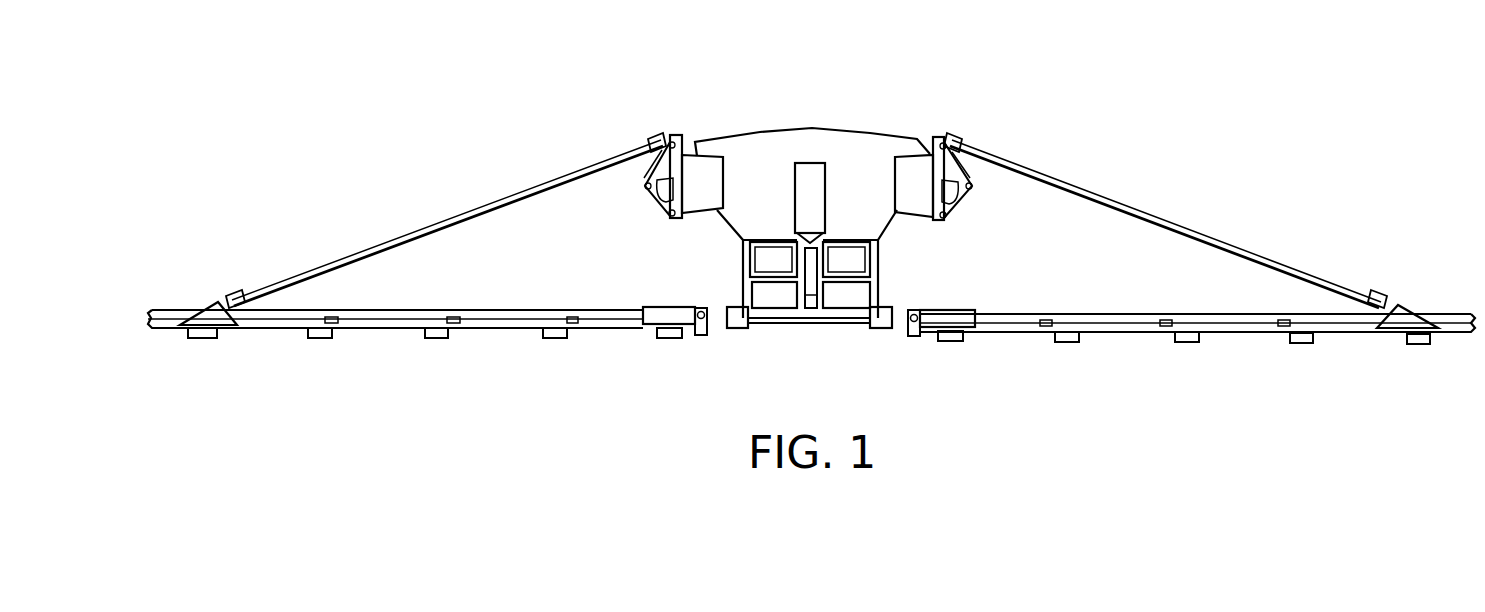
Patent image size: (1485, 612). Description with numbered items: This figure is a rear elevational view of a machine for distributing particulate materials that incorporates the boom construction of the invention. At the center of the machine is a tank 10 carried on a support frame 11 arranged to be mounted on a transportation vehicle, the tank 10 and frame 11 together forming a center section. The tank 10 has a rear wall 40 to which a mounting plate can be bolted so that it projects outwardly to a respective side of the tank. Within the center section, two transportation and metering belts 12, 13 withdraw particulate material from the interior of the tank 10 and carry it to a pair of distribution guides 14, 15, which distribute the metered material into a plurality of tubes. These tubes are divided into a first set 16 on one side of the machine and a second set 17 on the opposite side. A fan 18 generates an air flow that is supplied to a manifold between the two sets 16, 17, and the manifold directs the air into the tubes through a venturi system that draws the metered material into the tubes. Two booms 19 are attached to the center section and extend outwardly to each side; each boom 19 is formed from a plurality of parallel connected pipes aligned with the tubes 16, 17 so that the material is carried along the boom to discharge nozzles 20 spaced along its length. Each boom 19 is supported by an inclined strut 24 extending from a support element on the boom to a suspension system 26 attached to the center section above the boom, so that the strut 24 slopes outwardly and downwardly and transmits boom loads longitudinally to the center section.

The tank 10 is at (884, 122).
The support frame 11 is at (742, 258).
The transportation and metering belt 12 is at (775, 250).
The transportation and metering belt 13 is at (845, 255).
The distribution guide 14 is at (760, 292).
The distribution guide 15 is at (860, 293).
The first set of tubes 16 is at (714, 328).
The second set of tubes 17 is at (901, 330).
The fan 18 is at (807, 160).
The boom 19 is at (1124, 302).
The discharge nozzle 20 is at (315, 344).
The inclined strut 24 is at (426, 220).
The suspension system 26 is at (650, 124).
The rear wall 40 is at (735, 157).